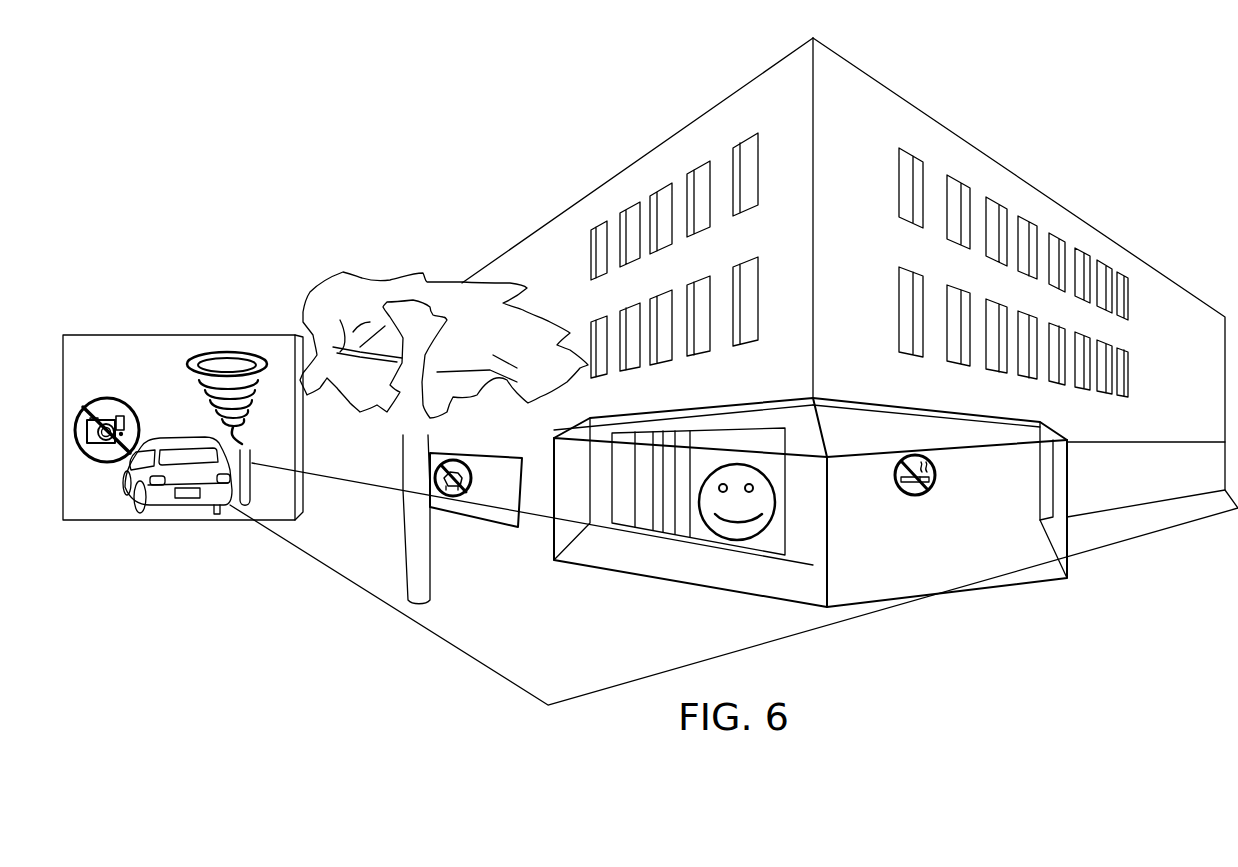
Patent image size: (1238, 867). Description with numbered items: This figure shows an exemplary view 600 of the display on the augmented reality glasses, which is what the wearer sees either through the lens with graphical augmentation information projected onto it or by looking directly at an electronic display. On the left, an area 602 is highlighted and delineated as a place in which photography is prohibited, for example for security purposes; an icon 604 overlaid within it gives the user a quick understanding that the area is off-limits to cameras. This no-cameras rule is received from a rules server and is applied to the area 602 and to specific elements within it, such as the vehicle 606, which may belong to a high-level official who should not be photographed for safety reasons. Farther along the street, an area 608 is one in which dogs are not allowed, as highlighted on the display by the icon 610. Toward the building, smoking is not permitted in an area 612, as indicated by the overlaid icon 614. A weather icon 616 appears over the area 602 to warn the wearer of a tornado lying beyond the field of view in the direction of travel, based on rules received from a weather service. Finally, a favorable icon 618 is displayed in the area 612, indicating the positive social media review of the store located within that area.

The view 600 is at (157, 235).
The area 602 is at (80, 335).
The icon 604 is at (107, 462).
The vehicle 606 is at (170, 514).
The area 608 is at (433, 475).
The icon 610 is at (473, 472).
The area 612 is at (690, 445).
The icon 614 is at (910, 452).
The weather icon 616 is at (203, 347).
The favorable icon 618 is at (733, 540).